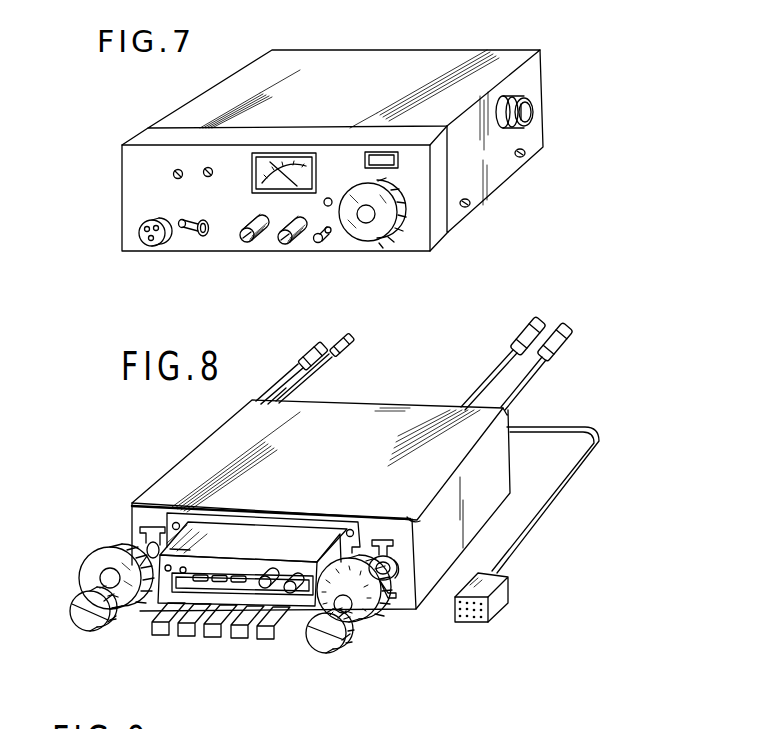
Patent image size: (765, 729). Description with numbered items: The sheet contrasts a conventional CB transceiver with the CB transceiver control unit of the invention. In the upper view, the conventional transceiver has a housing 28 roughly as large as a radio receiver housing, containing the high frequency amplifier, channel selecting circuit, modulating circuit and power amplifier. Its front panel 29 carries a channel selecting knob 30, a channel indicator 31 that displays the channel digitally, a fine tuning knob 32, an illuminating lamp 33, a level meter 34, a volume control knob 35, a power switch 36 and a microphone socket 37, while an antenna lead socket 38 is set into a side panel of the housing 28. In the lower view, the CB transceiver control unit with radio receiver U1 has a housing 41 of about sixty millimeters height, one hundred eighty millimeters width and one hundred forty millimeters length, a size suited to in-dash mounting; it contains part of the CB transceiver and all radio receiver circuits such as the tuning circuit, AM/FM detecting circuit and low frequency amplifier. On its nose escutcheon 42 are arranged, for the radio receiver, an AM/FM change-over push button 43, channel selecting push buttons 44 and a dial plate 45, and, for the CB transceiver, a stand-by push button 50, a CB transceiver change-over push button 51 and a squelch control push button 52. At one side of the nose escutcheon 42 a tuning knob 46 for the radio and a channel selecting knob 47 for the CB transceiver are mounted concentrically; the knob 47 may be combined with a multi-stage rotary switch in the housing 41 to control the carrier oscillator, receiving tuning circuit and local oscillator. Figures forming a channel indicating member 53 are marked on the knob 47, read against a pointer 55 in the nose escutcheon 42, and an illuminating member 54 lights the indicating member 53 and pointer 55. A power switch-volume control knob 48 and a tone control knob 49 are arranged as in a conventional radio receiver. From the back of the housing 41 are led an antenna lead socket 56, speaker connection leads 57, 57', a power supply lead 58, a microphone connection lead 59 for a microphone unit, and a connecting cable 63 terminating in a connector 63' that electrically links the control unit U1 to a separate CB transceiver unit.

In FIG. 7, the housing 28 is at (438, 63).
In FIG. 7, the front panel 29 is at (128, 185).
In FIG. 7, the channel selecting knob 30 is at (376, 232).
In FIG. 7, the channel indicator 31 is at (388, 150).
In FIG. 7, the fine tuning knob 32 is at (317, 241).
In FIG. 7, the illuminating lamp 33 is at (329, 198).
In FIG. 7, the level meter 34 is at (288, 160).
In FIG. 7, the volume control knob 35 is at (283, 238).
In FIG. 7, the power switch 36 is at (193, 234).
In FIG. 7, the microphone socket 37 is at (138, 235).
In FIG. 7, the antenna lead socket 38 is at (536, 112).
In FIG. 8, the housing 41 is at (396, 422).
In FIG. 8, the nose escutcheon 42 is at (276, 530).
In FIG. 8, the AM/FM change-over push button 43 is at (200, 570).
In FIG. 8, the channel selecting push buttons 44 is at (198, 640).
In FIG. 8, the dial plate 45 is at (256, 636).
In FIG. 8, the tuning knob 46 is at (326, 654).
In FIG. 8, the channel selecting knob 47 is at (372, 620).
In FIG. 8, the power switch-volume control knob 48 is at (80, 612).
In FIG. 8, the tone control knob 49 is at (96, 572).
In FIG. 8, the stand-by push button 50 is at (215, 573).
In FIG. 8, the CB transceiver change-over push button 51 is at (238, 573).
In FIG. 8, the squelch control push button 52 is at (268, 576).
In FIG. 8, the channel indicating member 53 is at (388, 600).
In FIG. 8, the illuminating member 54 is at (296, 580).
In FIG. 8, the pointer 55 is at (306, 616).
In FIG. 8, the antenna lead socket 56 is at (527, 331).
In FIG. 8, the speaker connection lead 57 is at (328, 368).
In FIG. 8, the speaker connection lead 57' is at (314, 388).
In FIG. 8, the power supply lead 58 is at (290, 375).
In FIG. 8, the microphone connection lead 59 is at (569, 347).
In FIG. 8, the connecting cable 63 is at (545, 500).
In FIG. 8, the connector 63' is at (485, 621).
In FIG. 8, the CB transceiver control unit with radio receiver U1 is at (228, 452).